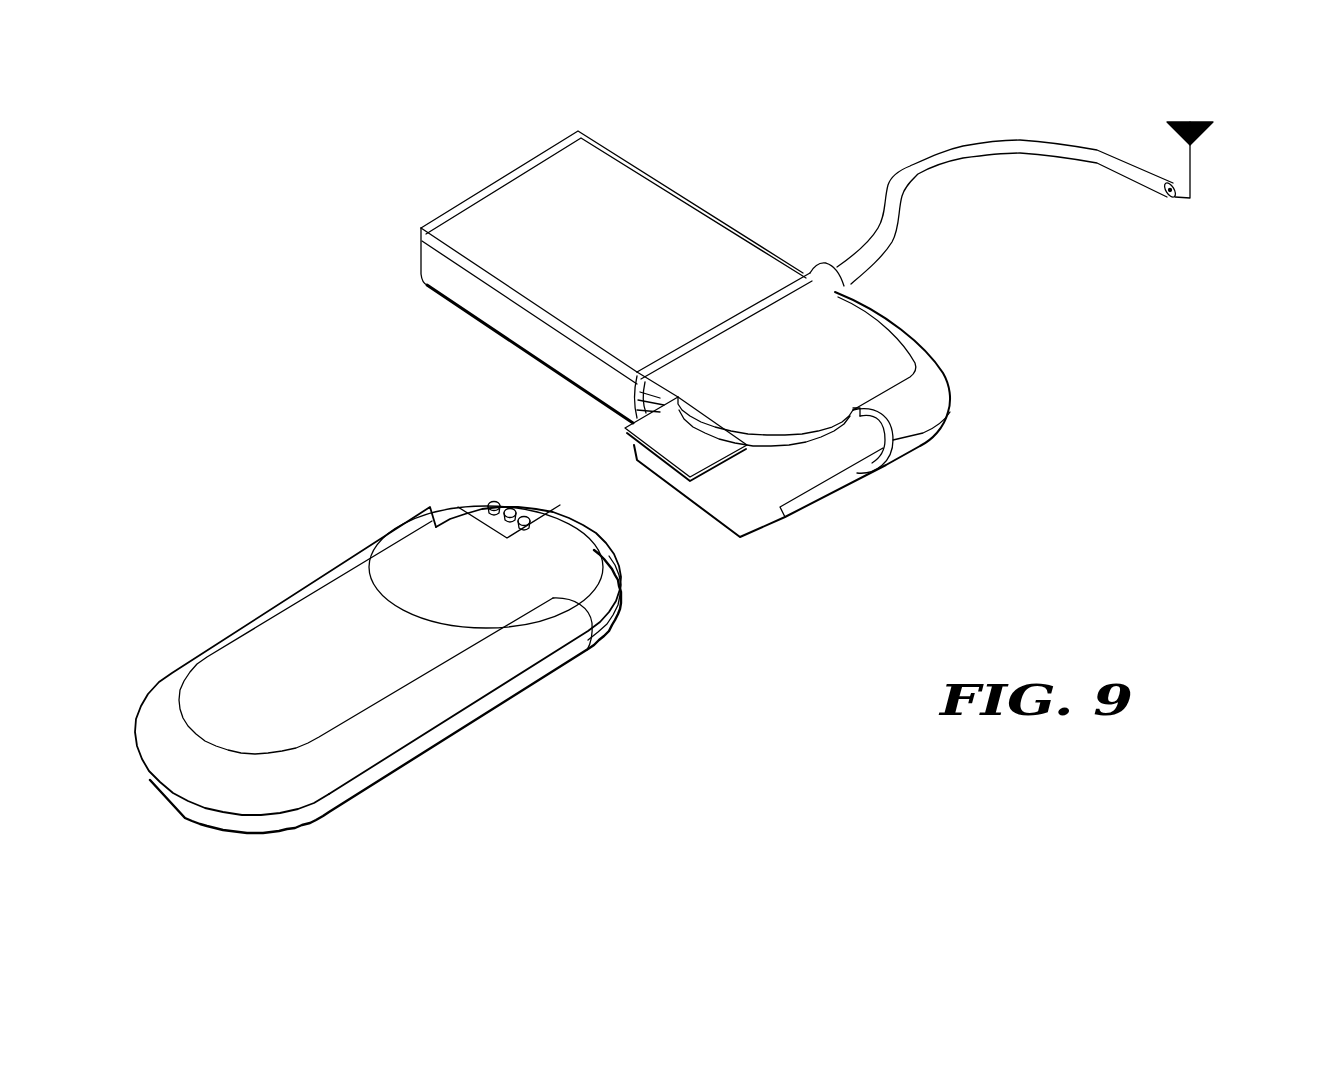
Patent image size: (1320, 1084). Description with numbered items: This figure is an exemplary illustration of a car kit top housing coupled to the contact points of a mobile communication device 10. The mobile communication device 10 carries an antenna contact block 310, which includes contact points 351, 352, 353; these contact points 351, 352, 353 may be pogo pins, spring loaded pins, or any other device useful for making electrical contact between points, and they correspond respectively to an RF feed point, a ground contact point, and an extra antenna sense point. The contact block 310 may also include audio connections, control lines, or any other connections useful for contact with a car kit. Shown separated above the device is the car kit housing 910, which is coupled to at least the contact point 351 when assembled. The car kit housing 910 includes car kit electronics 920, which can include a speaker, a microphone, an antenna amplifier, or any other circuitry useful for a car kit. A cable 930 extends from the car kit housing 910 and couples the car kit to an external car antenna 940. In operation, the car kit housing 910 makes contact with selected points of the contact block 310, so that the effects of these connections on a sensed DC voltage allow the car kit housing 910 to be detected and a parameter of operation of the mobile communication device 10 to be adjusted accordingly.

The mobile communication device 10 is at (182, 815).
The antenna contact block 310 is at (480, 486).
The contact point 351 is at (497, 503).
The contact point 352 is at (524, 526).
The contact point 353 is at (514, 511).
The car kit housing 910 is at (938, 362).
The car kit electronics 920 is at (673, 190).
The cable 930 is at (1038, 140).
The external car antenna 940 is at (1198, 133).